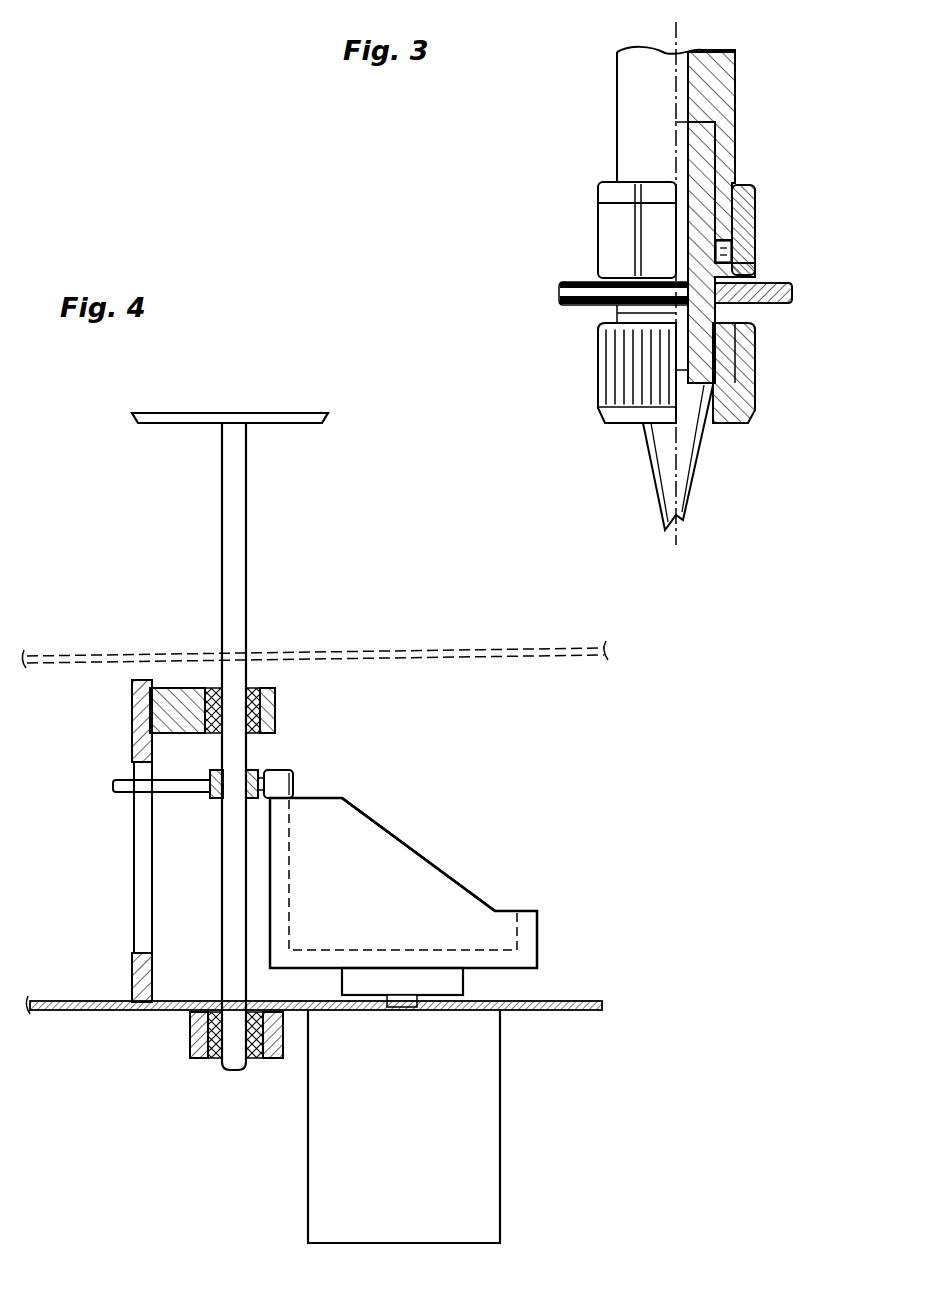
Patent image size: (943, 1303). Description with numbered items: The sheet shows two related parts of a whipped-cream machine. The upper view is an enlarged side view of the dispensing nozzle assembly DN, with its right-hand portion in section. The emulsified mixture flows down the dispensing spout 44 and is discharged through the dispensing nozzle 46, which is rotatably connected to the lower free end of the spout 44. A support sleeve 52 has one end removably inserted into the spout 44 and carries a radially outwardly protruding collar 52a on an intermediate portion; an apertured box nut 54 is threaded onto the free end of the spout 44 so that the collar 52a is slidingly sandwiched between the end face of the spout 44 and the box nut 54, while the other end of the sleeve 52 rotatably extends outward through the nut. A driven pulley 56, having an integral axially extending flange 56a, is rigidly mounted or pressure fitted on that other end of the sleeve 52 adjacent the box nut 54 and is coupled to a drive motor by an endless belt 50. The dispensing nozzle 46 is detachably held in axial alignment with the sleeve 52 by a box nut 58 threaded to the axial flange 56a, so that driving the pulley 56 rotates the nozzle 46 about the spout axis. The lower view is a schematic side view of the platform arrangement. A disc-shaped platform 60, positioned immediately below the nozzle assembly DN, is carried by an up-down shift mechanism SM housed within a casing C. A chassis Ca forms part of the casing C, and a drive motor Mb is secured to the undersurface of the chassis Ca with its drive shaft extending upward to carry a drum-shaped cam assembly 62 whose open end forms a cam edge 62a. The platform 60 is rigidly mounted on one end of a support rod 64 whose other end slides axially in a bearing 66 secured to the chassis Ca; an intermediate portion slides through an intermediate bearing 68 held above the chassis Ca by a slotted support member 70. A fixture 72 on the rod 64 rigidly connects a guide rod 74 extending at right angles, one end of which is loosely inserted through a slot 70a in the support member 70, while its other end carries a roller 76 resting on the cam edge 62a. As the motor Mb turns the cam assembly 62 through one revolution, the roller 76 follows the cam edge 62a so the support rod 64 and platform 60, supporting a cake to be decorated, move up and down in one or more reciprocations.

In FIG. 3, the dispensing spout 44 is at (730, 127).
In FIG. 3, the dispensing nozzle 46 is at (647, 450).
In FIG. 3, the endless belt 50 is at (793, 292).
In FIG. 3, the support sleeve 52 is at (703, 173).
In FIG. 3, the radially outwardly protruding collar 52a is at (745, 245).
In FIG. 3, the apertured box nut 54 is at (610, 230).
In FIG. 3, the driven pulley 56 is at (772, 283).
In FIG. 3, the axially extending flange 56a is at (720, 350).
In FIG. 3, the box nut 58 is at (632, 377).
In FIG. 3, the dispensing nozzle assembly DN is at (577, 270).
In FIG. 4, the disc-shaped platform 60 is at (296, 423).
In FIG. 4, the drum-shaped cam assembly 62 is at (422, 883).
In FIG. 4, the cam edge 62a is at (372, 817).
In FIG. 4, the support rod 64 is at (233, 580).
In FIG. 4, the bearing 66 is at (192, 1058).
In FIG. 4, the intermediate bearing 68 is at (275, 690).
In FIG. 4, the slotted support member 70 is at (133, 978).
In FIG. 4, the slot 70a is at (142, 892).
In FIG. 4, the fixture 72 is at (218, 798).
In FIG. 4, the guide rod 74 is at (127, 783).
In FIG. 4, the roller 76 is at (277, 770).
In FIG. 4, the casing C is at (447, 647).
In FIG. 4, the chassis Ca is at (553, 1010).
In FIG. 4, the drive motor Mb is at (333, 1160).
In FIG. 4, the up-down shift mechanism SM is at (357, 782).